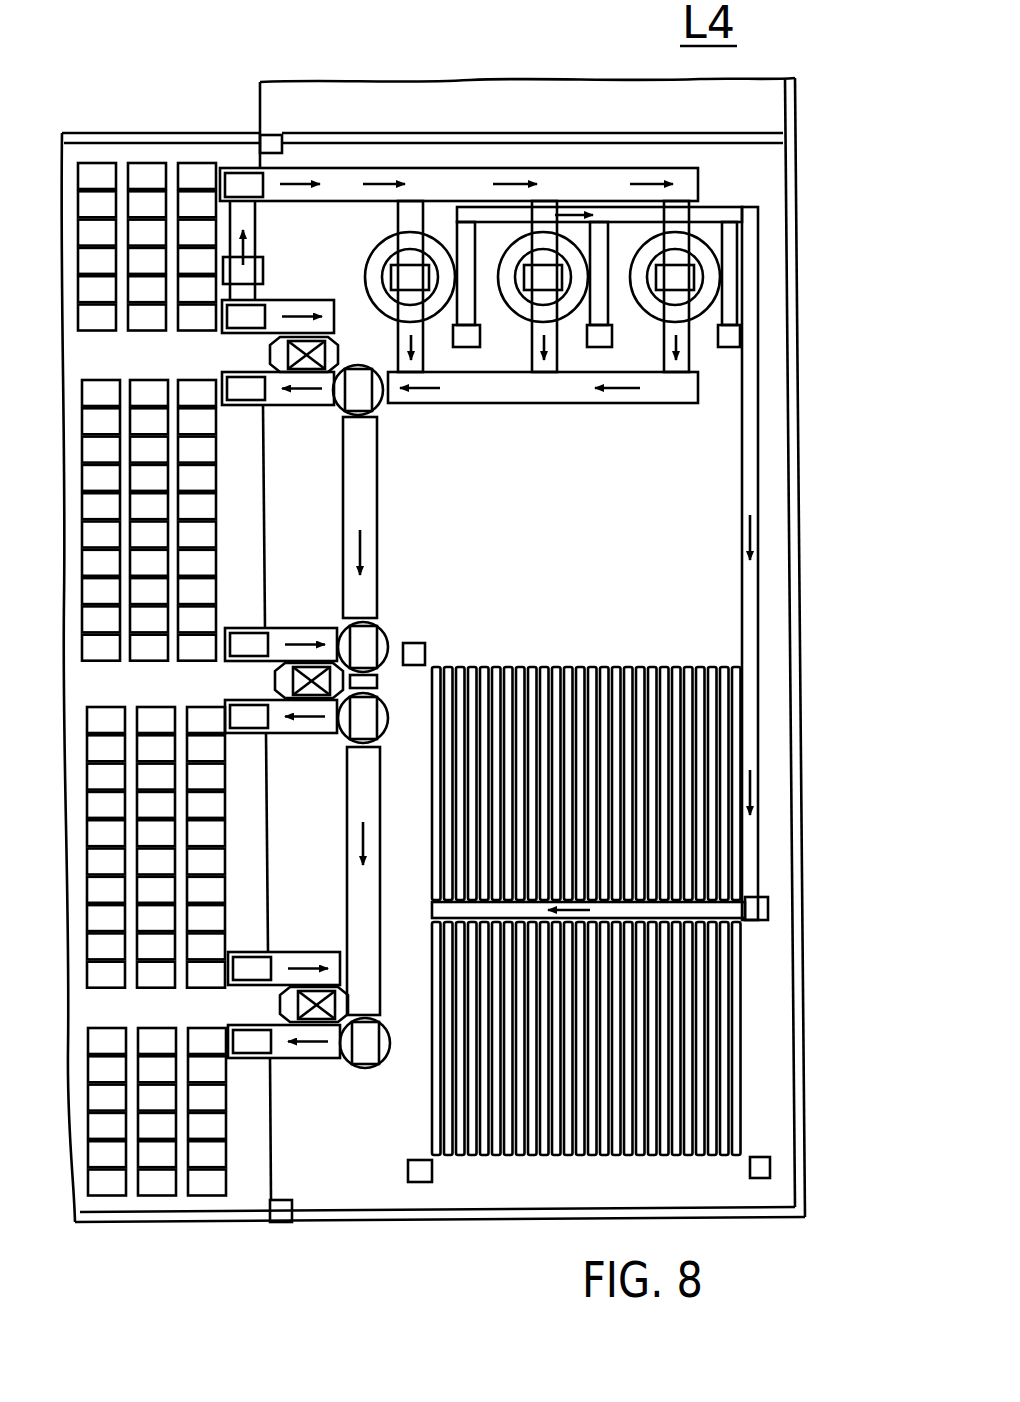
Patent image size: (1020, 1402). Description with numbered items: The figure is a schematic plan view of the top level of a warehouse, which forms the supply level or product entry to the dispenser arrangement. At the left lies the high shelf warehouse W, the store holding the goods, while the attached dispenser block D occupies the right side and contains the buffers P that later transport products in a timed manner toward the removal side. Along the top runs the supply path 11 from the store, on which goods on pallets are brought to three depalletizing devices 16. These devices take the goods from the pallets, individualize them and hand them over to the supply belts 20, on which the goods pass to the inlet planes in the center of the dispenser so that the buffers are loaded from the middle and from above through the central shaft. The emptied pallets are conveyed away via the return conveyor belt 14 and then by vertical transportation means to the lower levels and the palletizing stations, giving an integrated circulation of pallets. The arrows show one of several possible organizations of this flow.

The supply path 11 is at (432, 176).
The return conveyor belt 14 is at (558, 392).
The depalletizing device 16 is at (372, 268).
The supply belt 20 is at (722, 209).
The high shelf warehouse W is at (240, 540).
The dispenser block D is at (740, 1028).
The buffer P is at (746, 1090).